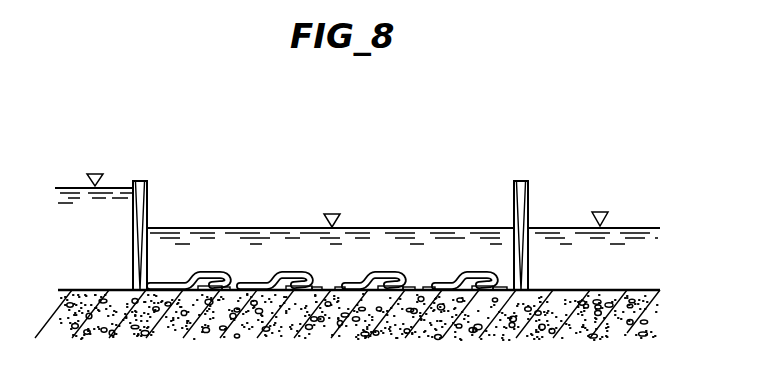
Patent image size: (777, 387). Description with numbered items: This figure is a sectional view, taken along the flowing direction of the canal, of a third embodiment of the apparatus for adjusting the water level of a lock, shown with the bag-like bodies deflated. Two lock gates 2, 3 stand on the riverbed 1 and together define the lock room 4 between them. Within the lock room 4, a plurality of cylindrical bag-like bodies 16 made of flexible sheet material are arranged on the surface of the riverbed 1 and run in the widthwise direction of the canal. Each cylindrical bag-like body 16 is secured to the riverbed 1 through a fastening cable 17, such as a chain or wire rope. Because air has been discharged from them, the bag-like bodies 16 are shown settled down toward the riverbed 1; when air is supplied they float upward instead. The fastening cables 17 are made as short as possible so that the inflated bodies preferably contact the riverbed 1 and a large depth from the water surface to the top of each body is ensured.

The riverbed 1 is at (233, 326).
The lock gate 2 is at (142, 180).
The lock gate 3 is at (522, 180).
The lock room 4 is at (410, 217).
The cylindrical bag-like body 16 is at (228, 286).
The fastening cable 17 is at (157, 287).